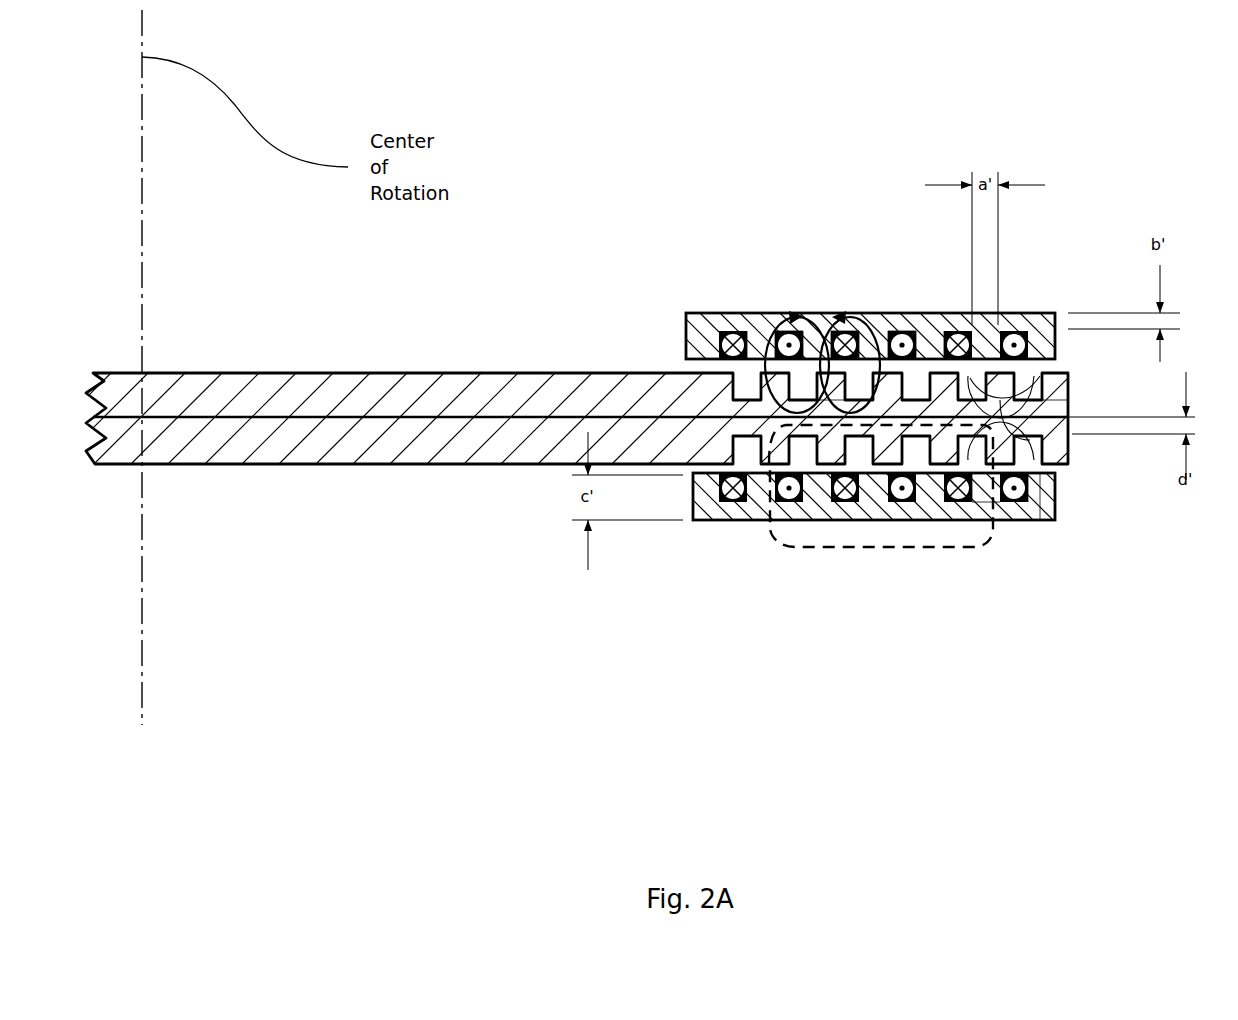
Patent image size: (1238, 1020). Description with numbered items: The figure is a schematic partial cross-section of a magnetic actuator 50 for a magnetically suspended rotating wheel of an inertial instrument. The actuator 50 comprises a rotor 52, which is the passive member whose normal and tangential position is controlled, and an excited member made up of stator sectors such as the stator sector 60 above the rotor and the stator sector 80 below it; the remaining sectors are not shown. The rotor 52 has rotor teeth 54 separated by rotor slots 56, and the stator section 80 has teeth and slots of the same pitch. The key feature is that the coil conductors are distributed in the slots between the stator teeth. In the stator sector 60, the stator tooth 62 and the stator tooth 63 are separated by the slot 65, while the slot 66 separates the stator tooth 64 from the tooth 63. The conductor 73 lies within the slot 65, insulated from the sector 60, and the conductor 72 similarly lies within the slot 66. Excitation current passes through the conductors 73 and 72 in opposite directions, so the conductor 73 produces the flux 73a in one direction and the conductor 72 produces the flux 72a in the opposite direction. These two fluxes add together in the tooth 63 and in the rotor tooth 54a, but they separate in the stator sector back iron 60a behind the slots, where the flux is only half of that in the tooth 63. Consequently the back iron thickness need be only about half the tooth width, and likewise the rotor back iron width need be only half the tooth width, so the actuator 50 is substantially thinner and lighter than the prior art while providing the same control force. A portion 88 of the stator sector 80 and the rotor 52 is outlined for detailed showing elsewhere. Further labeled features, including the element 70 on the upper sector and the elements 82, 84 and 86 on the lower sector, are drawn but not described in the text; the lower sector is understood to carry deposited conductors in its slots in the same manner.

The actuator 50 is at (706, 578).
The rotor 52 is at (283, 443).
The rotor teeth 54 is at (1062, 373).
The rotor tooth 54a is at (840, 379).
The rotor slots 56 is at (1030, 385).
The stator sector 60 is at (698, 313).
The stator sector back iron 60a is at (780, 329).
The stator tooth 62 is at (758, 337).
The stator tooth 63 is at (814, 335).
The stator tooth 64 is at (900, 335).
The slot 65 is at (802, 360).
The slot 66 is at (858, 360).
The stator tooth 70 is at (905, 337).
The conductor 72 is at (878, 340).
The flux 72a is at (850, 337).
The conductor 73 is at (800, 319).
The flux 73a is at (765, 367).
The stator sector 80 is at (1030, 520).
The lower stator back iron 82 is at (1057, 512).
The lower stator winding 84 is at (1000, 518).
The lower stator winding 86 is at (1016, 502).
The portion 88 is at (808, 549).